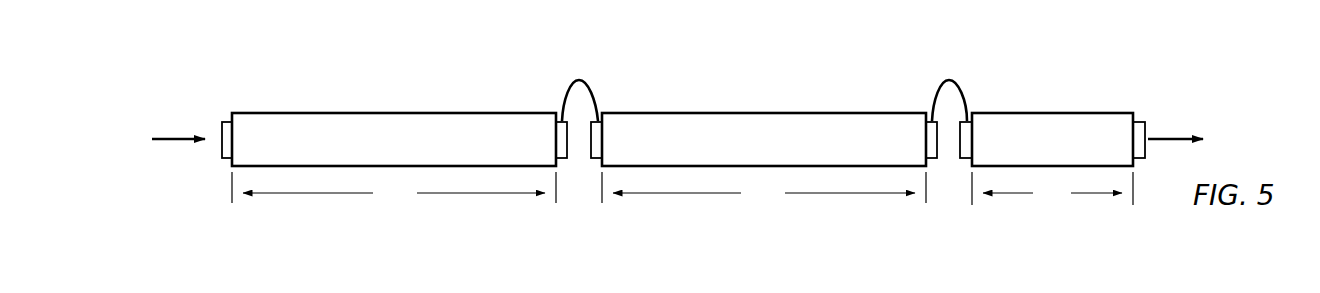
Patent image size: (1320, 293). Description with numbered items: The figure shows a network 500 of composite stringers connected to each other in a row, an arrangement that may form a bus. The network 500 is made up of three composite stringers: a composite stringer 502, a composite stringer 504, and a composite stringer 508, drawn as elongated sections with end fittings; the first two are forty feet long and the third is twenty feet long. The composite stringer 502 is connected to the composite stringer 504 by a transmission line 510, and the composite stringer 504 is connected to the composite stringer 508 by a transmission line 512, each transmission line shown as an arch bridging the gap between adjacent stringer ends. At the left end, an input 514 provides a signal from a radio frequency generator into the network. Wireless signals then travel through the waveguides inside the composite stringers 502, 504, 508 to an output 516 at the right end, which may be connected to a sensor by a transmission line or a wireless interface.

The network 500 is at (452, 39).
The composite stringer 502 is at (387, 113).
The composite stringer 504 is at (775, 113).
The composite stringer 508 is at (1060, 113).
The transmission line 510 is at (578, 80).
The transmission line 512 is at (950, 80).
The input 514 is at (222, 133).
The output 516 is at (1147, 128).